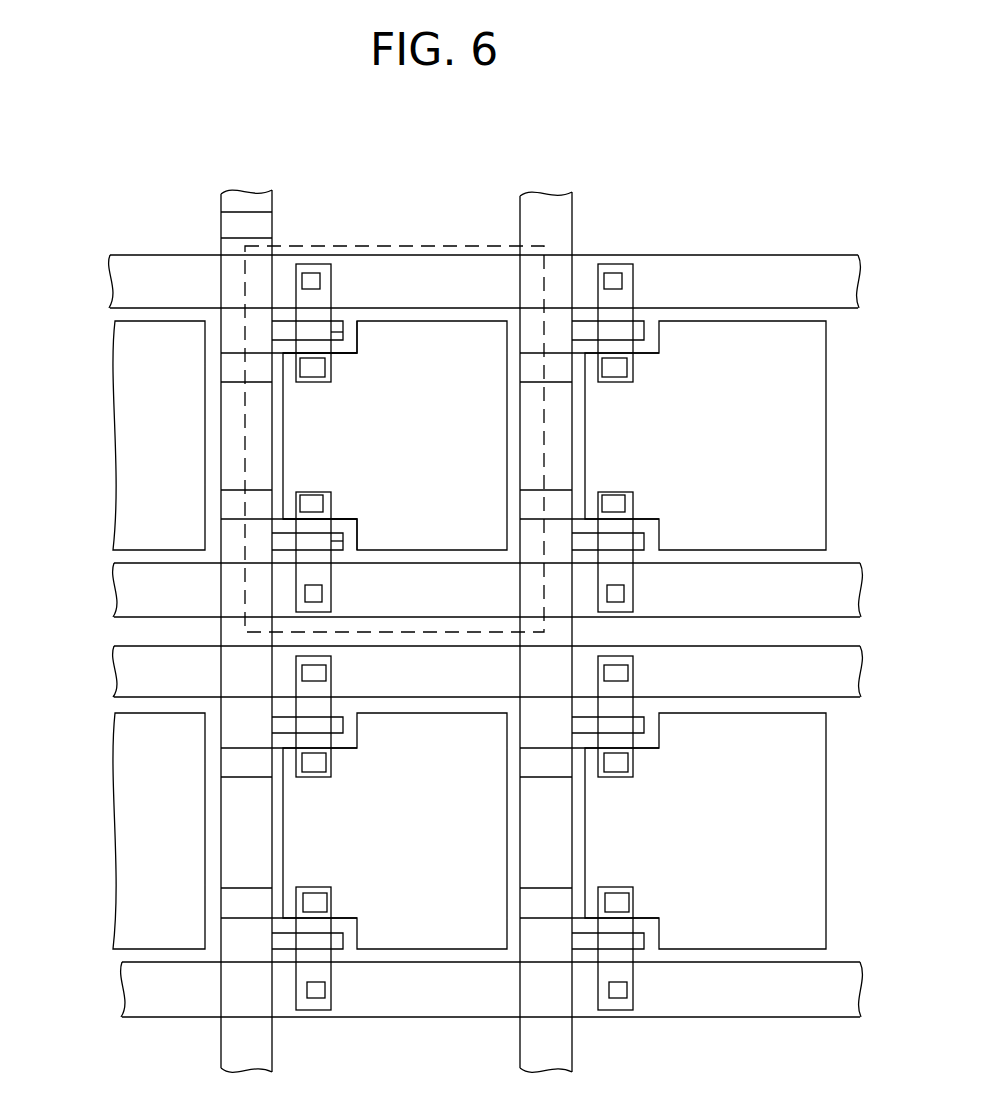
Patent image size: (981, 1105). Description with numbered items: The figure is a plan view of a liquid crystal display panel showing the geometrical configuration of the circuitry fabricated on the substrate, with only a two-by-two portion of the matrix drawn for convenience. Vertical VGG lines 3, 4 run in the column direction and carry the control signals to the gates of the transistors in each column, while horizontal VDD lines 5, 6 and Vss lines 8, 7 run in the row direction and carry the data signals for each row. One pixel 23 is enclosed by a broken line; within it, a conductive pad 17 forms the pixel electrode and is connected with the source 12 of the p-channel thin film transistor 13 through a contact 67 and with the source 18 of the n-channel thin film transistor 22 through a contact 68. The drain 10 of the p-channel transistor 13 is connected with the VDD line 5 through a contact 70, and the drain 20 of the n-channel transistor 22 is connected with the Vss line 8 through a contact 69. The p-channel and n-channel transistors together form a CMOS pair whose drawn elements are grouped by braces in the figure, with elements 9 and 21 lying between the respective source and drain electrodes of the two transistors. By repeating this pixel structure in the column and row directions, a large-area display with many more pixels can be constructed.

The VGG line 3 is at (260, 203).
The VGG line 4 is at (557, 218).
The VDD line 5 is at (115, 278).
The VDD line 6 is at (122, 678).
The Vss line 7 is at (155, 1008).
The Vss line 8 is at (122, 592).
The semiconductor layer 9 is at (318, 332).
The drain of the p-channel transistor 10 is at (327, 312).
The source of the p-channel transistor 12 is at (320, 343).
The p-channel thin film transistor 13 is at (367, 374).
The conductive pad 17 is at (467, 321).
The source of the n-channel transistor 18 is at (323, 523).
The drain of the n-channel transistor 20 is at (320, 560).
The semiconductor layer 21 is at (320, 543).
The n-channel thin film transistor 22 is at (367, 502).
The pixel 23 is at (400, 246).
The contact 67 is at (313, 377).
The contact 68 is at (313, 495).
The contact 69 is at (323, 592).
The contact 70 is at (311, 276).